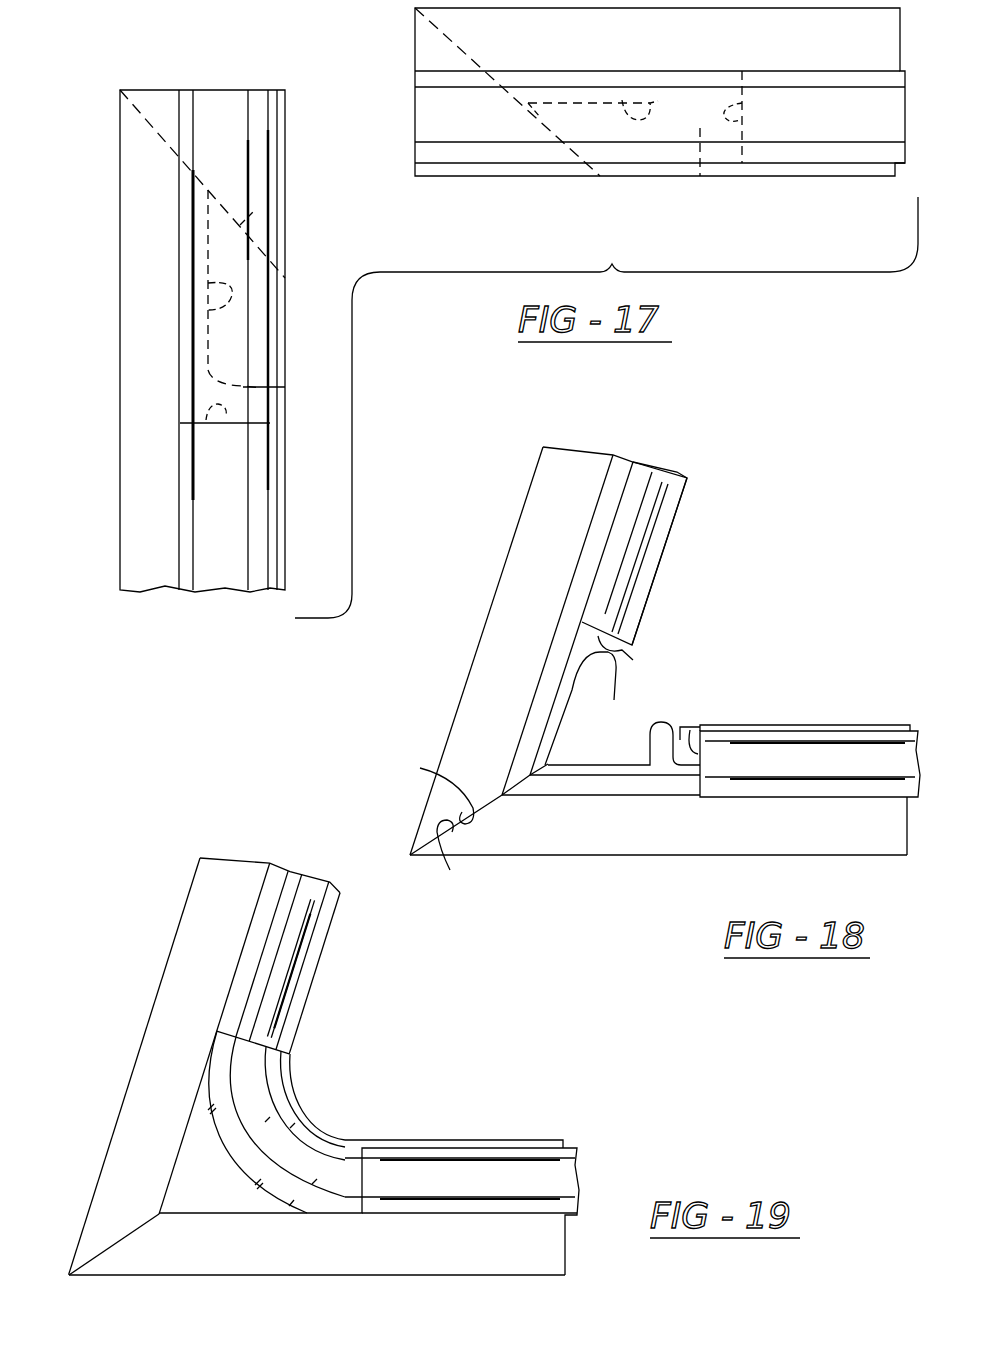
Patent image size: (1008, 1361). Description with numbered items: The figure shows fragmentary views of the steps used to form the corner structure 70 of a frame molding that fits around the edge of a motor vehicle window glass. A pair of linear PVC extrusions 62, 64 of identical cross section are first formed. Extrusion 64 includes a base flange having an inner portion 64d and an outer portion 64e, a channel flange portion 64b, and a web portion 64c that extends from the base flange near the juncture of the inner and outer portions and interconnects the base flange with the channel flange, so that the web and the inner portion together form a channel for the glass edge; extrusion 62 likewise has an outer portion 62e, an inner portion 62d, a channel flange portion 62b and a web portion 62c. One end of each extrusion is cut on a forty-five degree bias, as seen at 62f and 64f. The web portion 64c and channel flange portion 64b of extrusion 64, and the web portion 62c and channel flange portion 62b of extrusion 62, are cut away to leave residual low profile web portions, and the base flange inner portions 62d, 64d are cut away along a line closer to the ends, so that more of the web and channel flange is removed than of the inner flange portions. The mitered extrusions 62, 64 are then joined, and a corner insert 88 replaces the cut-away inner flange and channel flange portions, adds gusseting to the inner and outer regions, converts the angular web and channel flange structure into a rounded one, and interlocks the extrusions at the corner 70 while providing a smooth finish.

In FIG. 17, the extrusion 62 is at (400, 94).
In FIG. 18, the extrusion 62 is at (576, 651).
In FIG. 19, the extrusion 62 is at (155, 975).
In FIG. 17, the extrusion 64 is at (170, 62).
In FIG. 18, the extrusion 64 is at (665, 782).
In FIG. 19, the extrusion 64 is at (308, 1284).
In FIG. 18, the channel flange portion 62b is at (648, 500).
In FIG. 18, the web portion 62c is at (535, 726).
In FIG. 18, the inner portion of base flange 62d is at (673, 548).
In FIG. 18, the outer portion of base flange 62e is at (495, 643).
In FIG. 17, the 45 degree bias cut 62f is at (528, 106).
In FIG. 18, the 45 degree bias cut 62f is at (420, 768).
In FIG. 18, the channel flange portion 64b is at (820, 752).
In FIG. 18, the web portion 64c is at (648, 797).
In FIG. 18, the inner portion of base flange 64d is at (868, 725).
In FIG. 18, the outer portion of base flange 64e is at (752, 822).
In FIG. 17, the 45 degree bias cut 64f is at (238, 228).
In FIG. 18, the 45 degree bias cut 64f is at (449, 868).
In FIG. 19, the corner insert 88 is at (304, 1115).
In FIG. 19, the corner structure 70 is at (128, 1284).